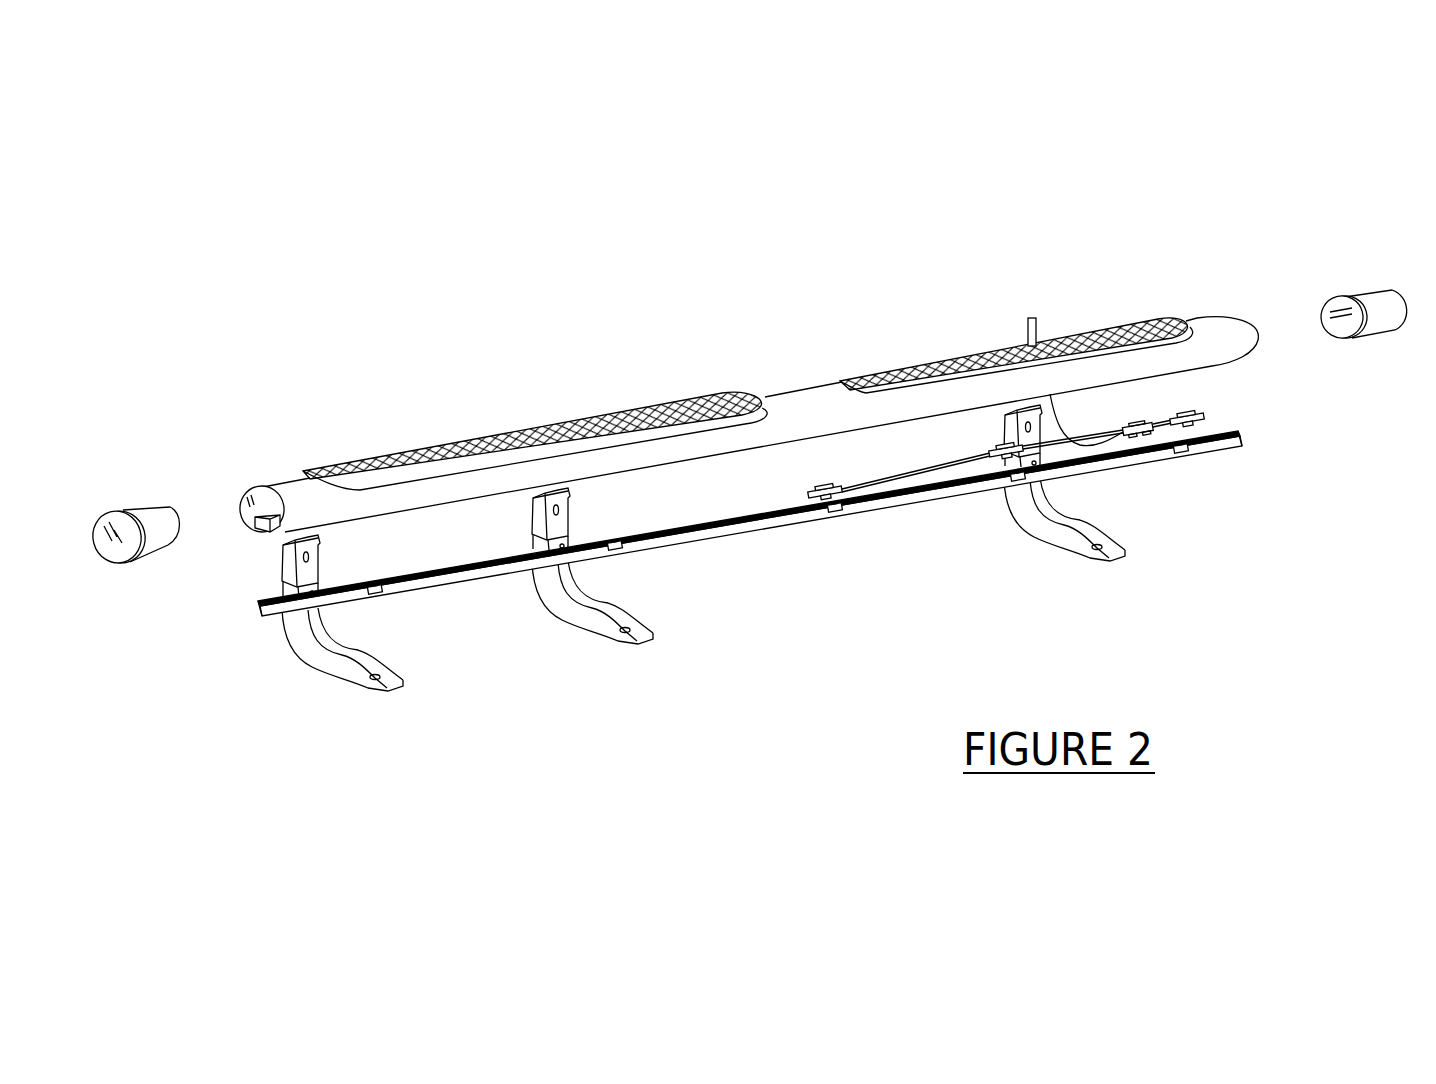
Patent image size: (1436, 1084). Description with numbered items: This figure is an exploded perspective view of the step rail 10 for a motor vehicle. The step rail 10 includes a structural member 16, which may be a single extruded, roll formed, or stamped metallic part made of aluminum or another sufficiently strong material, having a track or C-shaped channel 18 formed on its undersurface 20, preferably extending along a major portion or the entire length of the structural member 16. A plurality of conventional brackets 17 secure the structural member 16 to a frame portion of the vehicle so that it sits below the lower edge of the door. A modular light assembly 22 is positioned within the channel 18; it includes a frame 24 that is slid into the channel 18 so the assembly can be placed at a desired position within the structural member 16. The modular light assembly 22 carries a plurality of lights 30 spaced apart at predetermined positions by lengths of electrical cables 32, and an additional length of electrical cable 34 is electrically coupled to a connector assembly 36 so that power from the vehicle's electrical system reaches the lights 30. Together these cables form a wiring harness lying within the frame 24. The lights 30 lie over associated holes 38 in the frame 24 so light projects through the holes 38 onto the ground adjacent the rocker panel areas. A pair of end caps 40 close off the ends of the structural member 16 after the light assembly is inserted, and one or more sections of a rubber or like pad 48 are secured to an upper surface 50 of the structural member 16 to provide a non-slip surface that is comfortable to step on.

The step rail 10 is at (316, 369).
The structural member 16 is at (794, 395).
The brackets 17 is at (355, 655).
The channel 18 is at (258, 532).
The undersurface 20 is at (337, 512).
The modular light assembly 22 is at (1233, 400).
The frame 24 is at (1246, 451).
The lights 30 is at (814, 487).
The electrical cables 32 is at (958, 459).
The electrical cable 34 is at (1058, 406).
The connector assembly 36 is at (1122, 426).
The holes 38 is at (383, 594).
The end caps 40 is at (158, 512).
The pad 48 is at (722, 389).
The upper surface 50 is at (291, 486).